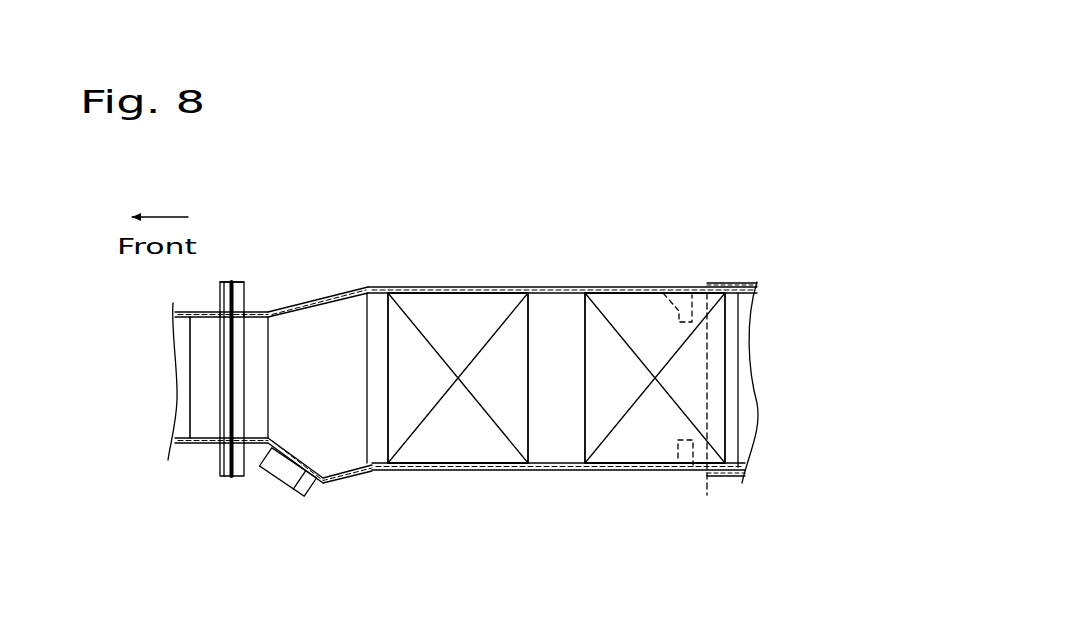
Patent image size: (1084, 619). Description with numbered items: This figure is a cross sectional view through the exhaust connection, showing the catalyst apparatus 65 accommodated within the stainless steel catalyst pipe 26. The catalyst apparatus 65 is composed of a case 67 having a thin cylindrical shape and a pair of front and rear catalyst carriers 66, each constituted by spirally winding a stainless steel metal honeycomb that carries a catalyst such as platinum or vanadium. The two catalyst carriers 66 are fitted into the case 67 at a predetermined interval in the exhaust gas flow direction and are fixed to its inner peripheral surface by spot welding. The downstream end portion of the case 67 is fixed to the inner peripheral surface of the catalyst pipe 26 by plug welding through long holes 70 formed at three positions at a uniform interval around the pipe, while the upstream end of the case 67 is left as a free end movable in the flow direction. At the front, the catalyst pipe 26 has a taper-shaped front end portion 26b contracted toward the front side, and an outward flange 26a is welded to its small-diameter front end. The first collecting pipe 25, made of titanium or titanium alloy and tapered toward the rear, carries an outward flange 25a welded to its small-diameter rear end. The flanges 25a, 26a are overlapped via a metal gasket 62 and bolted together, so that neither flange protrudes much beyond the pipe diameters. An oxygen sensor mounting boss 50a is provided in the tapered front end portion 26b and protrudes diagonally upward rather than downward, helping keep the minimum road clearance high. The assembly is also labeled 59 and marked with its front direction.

The first collecting pipe 25 is at (180, 443).
The outward flange 25a is at (222, 476).
The catalyst pipe 26 is at (562, 465).
The outward flange 26a is at (236, 476).
The front end portion 26b is at (320, 298).
The oxygen sensor mounting boss 50a is at (307, 492).
The exhaust assembly 59 is at (216, 252).
The metal gasket 62 is at (230, 360).
The catalyst apparatus 65 is at (495, 284).
The catalyst carrier 66 is at (443, 438).
The case 67 is at (500, 452).
The long hole 70 is at (663, 293).